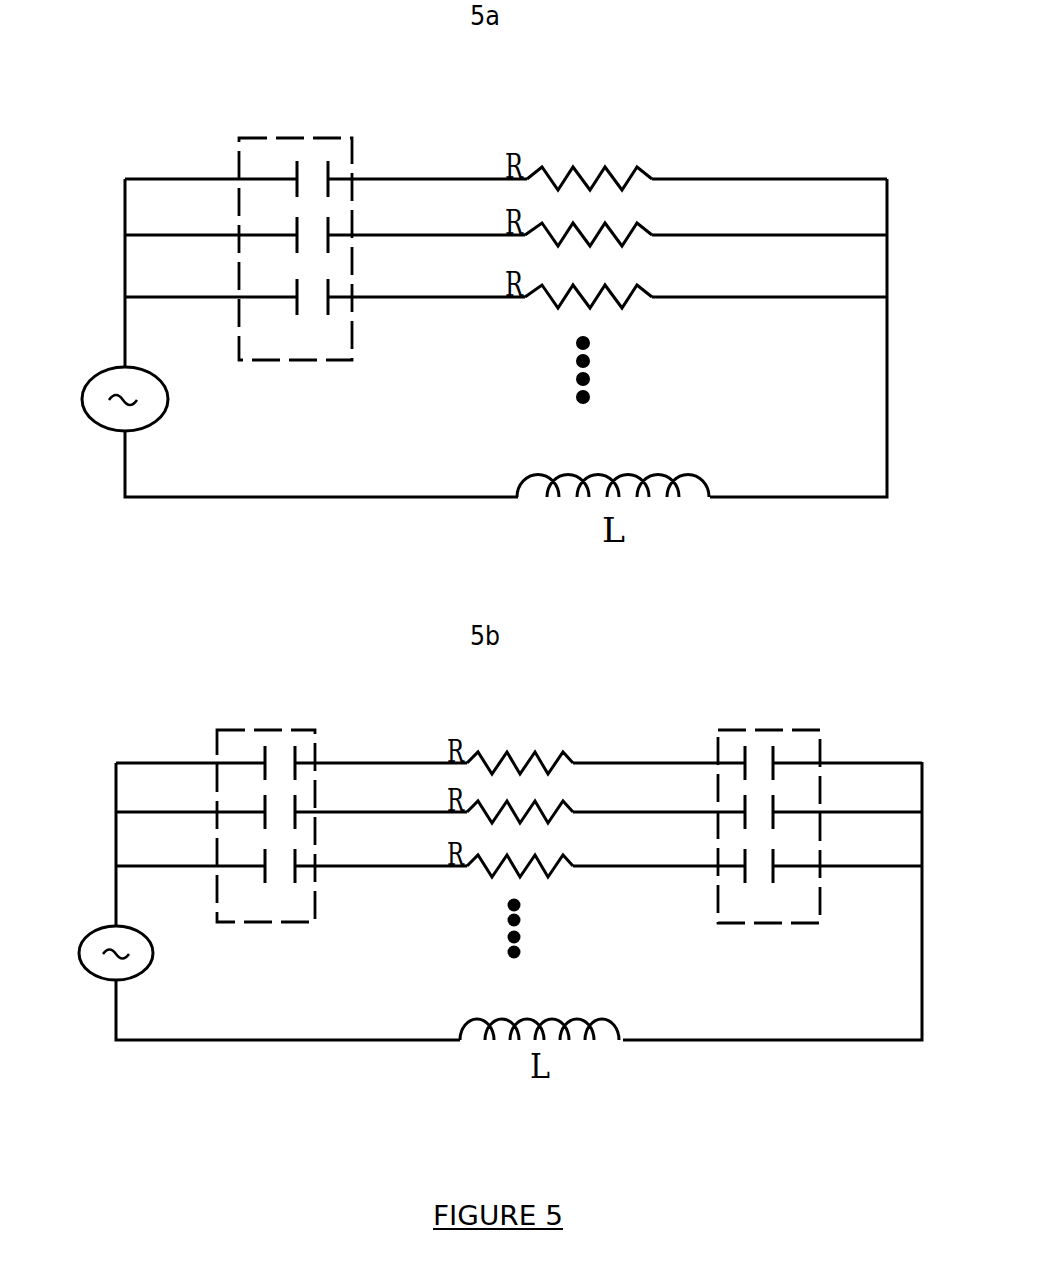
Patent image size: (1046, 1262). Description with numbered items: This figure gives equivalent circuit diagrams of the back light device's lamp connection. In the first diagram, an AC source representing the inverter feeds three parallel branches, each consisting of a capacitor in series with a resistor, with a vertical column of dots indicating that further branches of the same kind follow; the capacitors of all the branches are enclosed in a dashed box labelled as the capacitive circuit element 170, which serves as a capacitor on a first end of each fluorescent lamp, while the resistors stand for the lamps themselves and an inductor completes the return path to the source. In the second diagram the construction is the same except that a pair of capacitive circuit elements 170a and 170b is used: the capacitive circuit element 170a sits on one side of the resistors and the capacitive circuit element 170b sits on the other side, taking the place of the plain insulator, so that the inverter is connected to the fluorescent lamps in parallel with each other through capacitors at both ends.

In FIG. 5a, the capacitive circuit element 170 is at (295, 276).
In FIG. 5b, the capacitive circuit element 170a is at (266, 850).
In FIG. 5b, the capacitive circuit element 170b is at (769, 852).